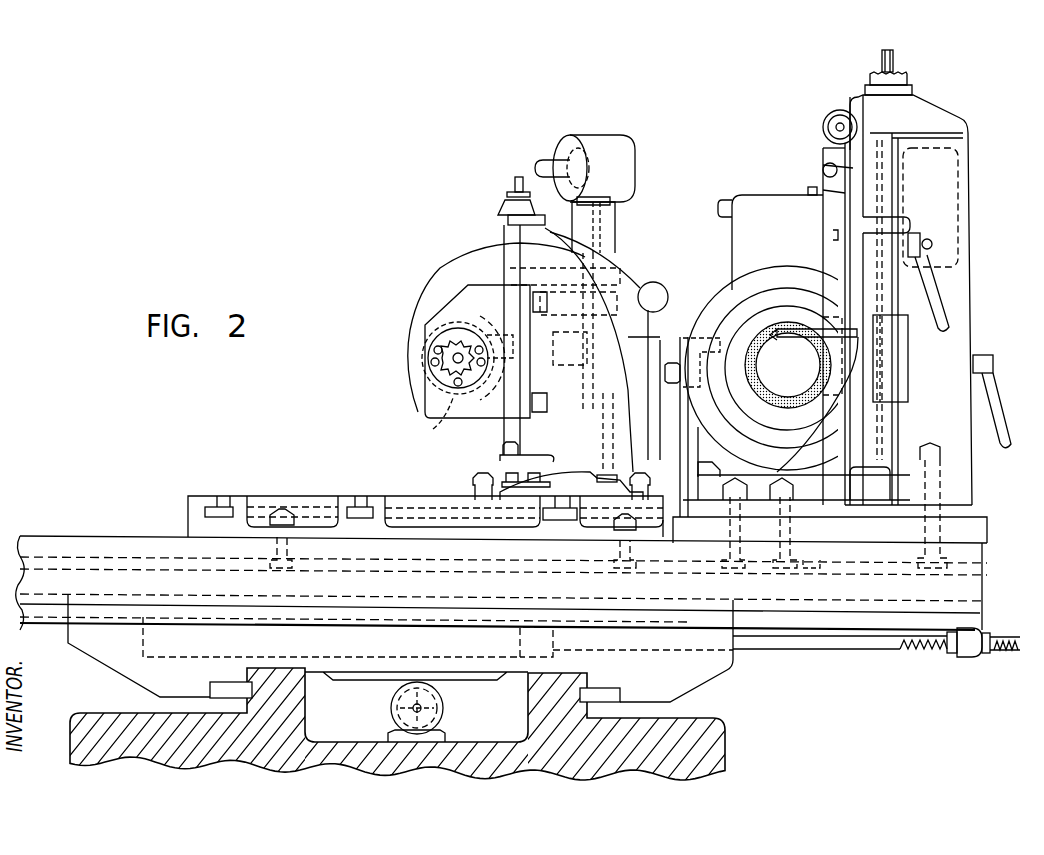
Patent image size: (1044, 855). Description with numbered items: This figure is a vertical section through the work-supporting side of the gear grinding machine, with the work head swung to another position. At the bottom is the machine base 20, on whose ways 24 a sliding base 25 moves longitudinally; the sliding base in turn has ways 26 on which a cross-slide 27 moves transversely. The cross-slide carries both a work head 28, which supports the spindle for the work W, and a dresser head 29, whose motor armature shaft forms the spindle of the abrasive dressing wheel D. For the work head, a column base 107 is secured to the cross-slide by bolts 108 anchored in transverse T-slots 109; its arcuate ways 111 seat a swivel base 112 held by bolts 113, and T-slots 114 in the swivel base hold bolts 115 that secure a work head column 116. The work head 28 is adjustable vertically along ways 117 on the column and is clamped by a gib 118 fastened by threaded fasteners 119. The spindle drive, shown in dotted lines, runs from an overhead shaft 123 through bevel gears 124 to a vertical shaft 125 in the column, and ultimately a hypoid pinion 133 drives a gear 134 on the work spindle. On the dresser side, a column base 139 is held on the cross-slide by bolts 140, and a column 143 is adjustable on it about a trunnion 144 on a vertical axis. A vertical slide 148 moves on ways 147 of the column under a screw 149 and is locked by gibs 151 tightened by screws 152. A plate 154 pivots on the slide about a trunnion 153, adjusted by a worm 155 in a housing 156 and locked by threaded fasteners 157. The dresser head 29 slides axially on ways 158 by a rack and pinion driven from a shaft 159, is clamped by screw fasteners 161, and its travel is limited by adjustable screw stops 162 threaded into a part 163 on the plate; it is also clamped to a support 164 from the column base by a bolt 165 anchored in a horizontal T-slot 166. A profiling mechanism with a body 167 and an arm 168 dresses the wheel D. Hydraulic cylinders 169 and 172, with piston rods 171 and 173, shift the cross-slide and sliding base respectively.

The base 20 is at (712, 746).
The ways 24 is at (252, 678).
The sliding base 25 is at (718, 668).
The ways 26 is at (680, 603).
The cross-slide 27 is at (972, 556).
The work head 28 is at (440, 286).
The dresser head 29 is at (731, 257).
The column base 107 is at (188, 529).
The bolts 108 is at (285, 508).
The T-slots 109 is at (97, 572).
The arcuate ways 111 is at (232, 496).
The swivel base 112 is at (623, 477).
The bolts 113 is at (478, 479).
The T-slots 114 is at (497, 467).
The bolts 115 is at (608, 437).
The work head column 116 is at (605, 352).
The ways 117 is at (505, 237).
The gib 118 is at (530, 383).
The threaded fasteners 119 is at (538, 404).
The overhead shaft 123 is at (545, 160).
The bevel gears 124 is at (630, 186).
The vertical shaft 125 is at (612, 241).
The hypoid pinion 133 is at (497, 330).
The gear 134 is at (433, 429).
The column base 139 is at (980, 536).
The bolts 140 is at (752, 566).
The column 143 is at (975, 328).
The trunnion 144 is at (808, 560).
The ways 147 is at (869, 470).
The vertical slide 148 is at (853, 168).
The screw 149 is at (883, 56).
The gibs 151 is at (910, 322).
The screws 152 is at (932, 247).
The trunnion 153 is at (863, 395).
The plate 154 is at (845, 193).
The worm 155 is at (836, 127).
The housing 156 is at (834, 113).
The threaded fasteners 157 is at (993, 372).
The ways 158 is at (832, 233).
The shaft 159 is at (722, 198).
The screw fasteners 161 is at (805, 190).
The adjustable screw stops 162 is at (823, 170).
The part 163 is at (823, 152).
The support 164 is at (697, 462).
The bolt 165 is at (692, 342).
The T-slot 166 is at (678, 387).
The body 167 is at (905, 396).
The arm 168 is at (778, 472).
The cylinder 169 is at (128, 652).
The piston rod 171 is at (893, 648).
The cylinder 172 is at (445, 708).
The rod 173 is at (398, 708).
The work W is at (450, 362).
The dressing wheel D is at (763, 348).